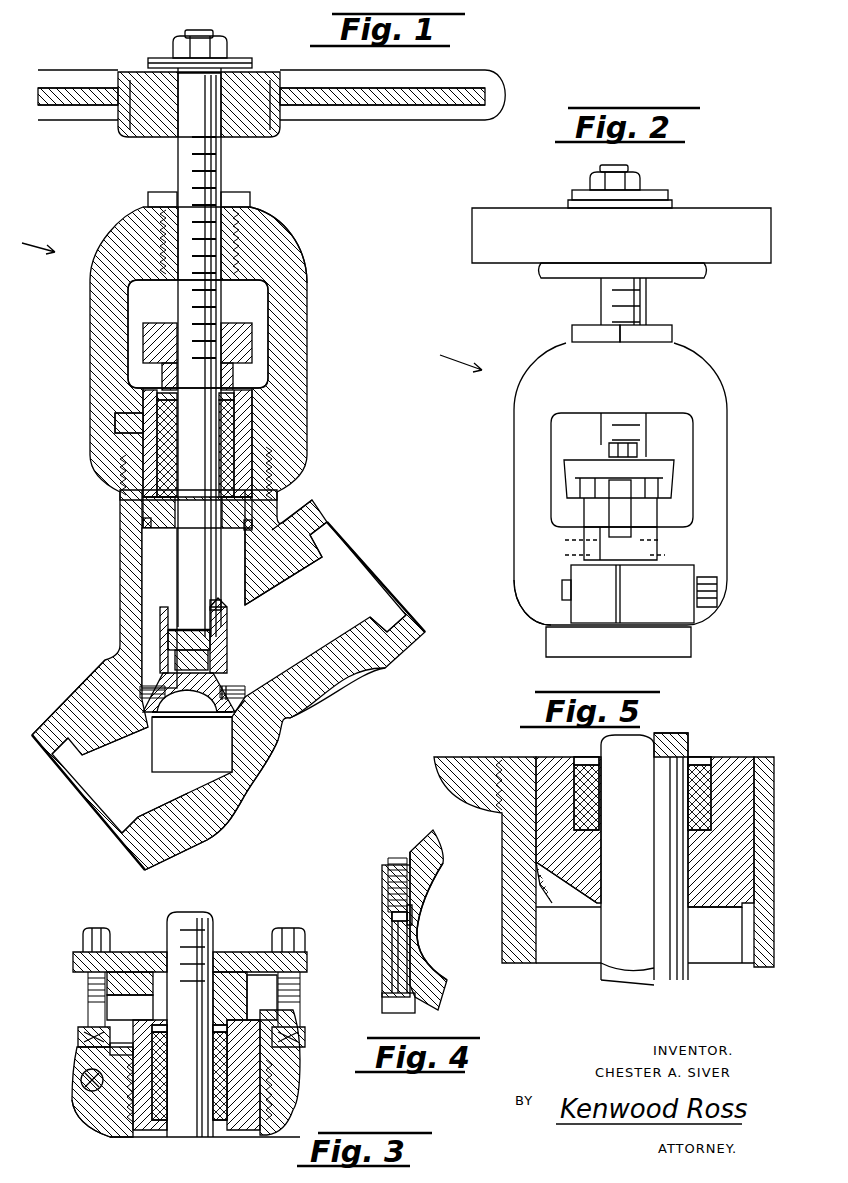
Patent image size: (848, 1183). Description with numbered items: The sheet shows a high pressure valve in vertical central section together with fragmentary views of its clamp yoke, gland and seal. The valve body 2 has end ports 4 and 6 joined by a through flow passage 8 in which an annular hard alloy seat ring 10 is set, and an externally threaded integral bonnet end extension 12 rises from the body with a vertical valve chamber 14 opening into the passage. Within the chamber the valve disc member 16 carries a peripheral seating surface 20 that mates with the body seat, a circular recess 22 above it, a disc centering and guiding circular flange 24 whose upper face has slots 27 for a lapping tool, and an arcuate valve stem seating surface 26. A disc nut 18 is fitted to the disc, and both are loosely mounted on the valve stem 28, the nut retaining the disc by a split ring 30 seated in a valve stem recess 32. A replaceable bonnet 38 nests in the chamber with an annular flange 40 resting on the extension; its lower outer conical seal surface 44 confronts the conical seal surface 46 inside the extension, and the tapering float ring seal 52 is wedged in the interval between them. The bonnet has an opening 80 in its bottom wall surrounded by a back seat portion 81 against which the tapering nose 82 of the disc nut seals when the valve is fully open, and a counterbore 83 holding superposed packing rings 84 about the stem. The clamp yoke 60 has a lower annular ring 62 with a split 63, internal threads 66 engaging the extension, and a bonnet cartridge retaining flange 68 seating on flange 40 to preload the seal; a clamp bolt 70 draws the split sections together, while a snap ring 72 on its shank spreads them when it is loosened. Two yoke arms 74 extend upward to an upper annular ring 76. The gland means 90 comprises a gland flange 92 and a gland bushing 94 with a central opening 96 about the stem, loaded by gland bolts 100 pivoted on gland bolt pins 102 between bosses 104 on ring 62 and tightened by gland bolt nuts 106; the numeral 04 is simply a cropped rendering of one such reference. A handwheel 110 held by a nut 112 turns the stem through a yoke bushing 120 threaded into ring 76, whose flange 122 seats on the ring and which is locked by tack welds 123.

In FIG. 1, the valve body 2 is at (244, 784).
In FIG. 1, the end port 4 is at (99, 797).
In FIG. 1, the end port 6 is at (356, 572).
In FIG. 1, the through flow passage 8 is at (195, 751).
In FIG. 1, the seat ring 10 is at (265, 745).
In FIG. 1, the bonnet end extension 12 is at (128, 575).
In FIG. 3, the bonnet end extension 12 is at (110, 1130).
In FIG. 1, the valve chamber 14 is at (160, 555).
In FIG. 1, the valve disc member 16 is at (188, 689).
In FIG. 1, the disc nut 18 is at (225, 620).
In FIG. 1, the seating surface 20 is at (240, 707).
In FIG. 1, the circular recess 22 is at (240, 695).
In FIG. 1, the circular flange 24 is at (140, 690).
In FIG. 1, the valve stem seating surface 26 is at (190, 668).
In FIG. 1, the slots 27 is at (228, 688).
In FIG. 1, the valve stem 28 is at (198, 561).
In FIG. 2, the valve stem 28 is at (646, 302).
In FIG. 5, the valve stem 28 is at (646, 907).
In FIG. 3, the valve stem 28 is at (194, 1097).
In FIG. 1, the split ring 30 is at (166, 640).
In FIG. 1, the valve stem recess 32 is at (190, 628).
In FIG. 1, the bonnet 38 is at (145, 457).
In FIG. 3, the bonnet 38 is at (142, 1137).
In FIG. 1, the annular flange 40 is at (135, 423).
In FIG. 3, the annular flange 40 is at (122, 1051).
In FIG. 1, the seal surface 44 is at (250, 524).
In FIG. 5, the seal surface 44 is at (540, 892).
In FIG. 5, the seal surface 46 is at (556, 887).
In FIG. 1, the float ring seal 52 is at (143, 523).
In FIG. 5, the float ring seal 52 is at (548, 908).
In FIG. 1, the clamp yoke 60 is at (38, 241).
In FIG. 2, the clamp yoke 60 is at (461, 356).
In FIG. 1, the lower annular ring 62 is at (290, 447).
In FIG. 2, the lower annular ring 62 is at (522, 591).
In FIG. 5, the lower annular ring 62 is at (464, 770).
In FIG. 4, the lower annular ring 62 is at (425, 845).
In FIG. 3, the lower annular ring 62 is at (97, 1108).
In FIG. 2, the split 63 is at (622, 613).
In FIG. 4, the split 63 is at (412, 913).
In FIG. 1, the internal threads 66 is at (272, 465).
In FIG. 5, the internal threads 66 is at (505, 780).
In FIG. 3, the internal threads 66 is at (272, 1090).
In FIG. 1, the bonnet cartridge retaining flange 68 is at (135, 397).
In FIG. 3, the bonnet cartridge retaining flange 68 is at (120, 1022).
In FIG. 2, the clamp bolt 70 is at (707, 590).
In FIG. 4, the clamp bolt 70 is at (385, 1000).
In FIG. 3, the clamp bolt 70 is at (81, 1083).
In FIG. 2, the snap ring 72 is at (618, 585).
In FIG. 4, the snap ring 72 is at (392, 913).
In FIG. 3, the snap ring 72 is at (82, 1072).
In FIG. 1, the yoke arms 74 is at (100, 297).
In FIG. 2, the yoke arms 74 is at (525, 431).
In FIG. 1, the upper annular ring 76 is at (278, 228).
In FIG. 1, the opening 80 is at (186, 512).
In FIG. 5, the opening 80 is at (612, 846).
In FIG. 3, the opening 80 is at (172, 1137).
In FIG. 1, the back seat portion 81 is at (208, 528).
In FIG. 5, the back seat portion 81 is at (700, 907).
In FIG. 1, the nose 82 is at (218, 603).
In FIG. 1, the counterbore 83 is at (170, 456).
In FIG. 5, the counterbore 83 is at (602, 765).
In FIG. 3, the counterbore 83 is at (168, 1036).
In FIG. 1, the packing rings 84 is at (220, 420).
In FIG. 5, the packing rings 84 is at (596, 812).
In FIG. 3, the packing rings 84 is at (168, 1063).
In FIG. 1, the gland means 90 is at (155, 312).
In FIG. 2, the gland means 90 is at (580, 449).
In FIG. 3, the gland means 90 is at (141, 944).
In FIG. 1, the gland flange 92 is at (240, 325).
In FIG. 2, the gland flange 92 is at (662, 465).
In FIG. 3, the gland flange 92 is at (240, 958).
In FIG. 1, the gland bushing 94 is at (242, 376).
In FIG. 3, the gland bushing 94 is at (222, 1006).
In FIG. 1, the central opening 96 is at (178, 384).
In FIG. 2, the gland bolts 100 is at (617, 510).
In FIG. 3, the gland bolts 100 is at (90, 982).
In FIG. 2, the gland bolt pin 102 is at (601, 539).
In FIG. 3, the gland bolt pin 102 is at (88, 1038).
In FIG. 2, the slot 04 is at (567, 554).
In FIG. 2, the bosses 104 is at (638, 544).
In FIG. 2, the gland bolt nut 106 is at (640, 440).
In FIG. 3, the gland bolt nut 106 is at (82, 945).
In FIG. 1, the handwheel 110 is at (363, 100).
In FIG. 2, the handwheel 110 is at (636, 242).
In FIG. 1, the nut 112 is at (225, 47).
In FIG. 2, the nut 112 is at (650, 186).
In FIG. 1, the yoke bushing 120 is at (228, 245).
In FIG. 1, the flange 122 is at (236, 203).
In FIG. 2, the flange 122 is at (660, 334).
In FIG. 1, the tack welds 123 is at (148, 200).
In FIG. 2, the tack welds 123 is at (572, 336).